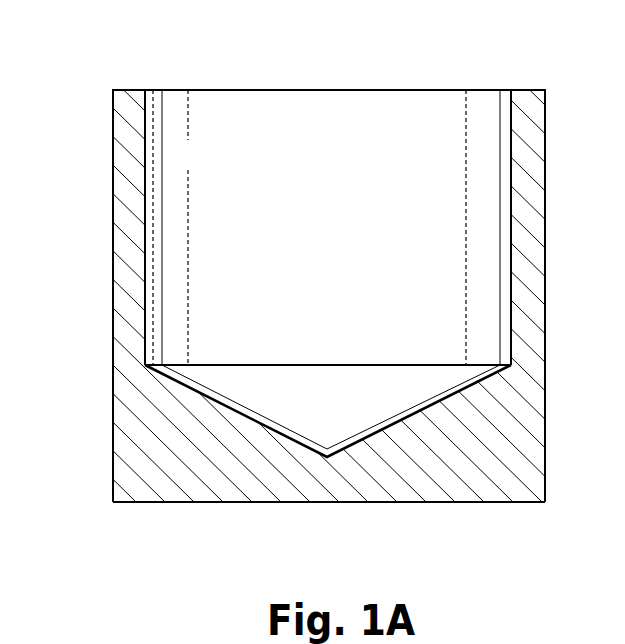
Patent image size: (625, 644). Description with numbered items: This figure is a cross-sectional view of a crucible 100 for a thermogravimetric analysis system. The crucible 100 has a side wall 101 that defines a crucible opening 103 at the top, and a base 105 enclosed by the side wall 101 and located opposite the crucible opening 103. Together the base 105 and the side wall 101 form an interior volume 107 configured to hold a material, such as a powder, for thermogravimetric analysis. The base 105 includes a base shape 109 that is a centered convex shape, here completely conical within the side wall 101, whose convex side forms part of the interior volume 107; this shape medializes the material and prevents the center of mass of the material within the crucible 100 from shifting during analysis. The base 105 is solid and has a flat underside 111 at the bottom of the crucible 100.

The crucible 100 is at (86, 90).
The side wall 101 is at (118, 232).
The crucible opening 103 is at (478, 88).
The base 105 is at (165, 440).
The interior volume 107 is at (313, 191).
The base shape 109 is at (412, 414).
The flat underside 111 is at (150, 504).